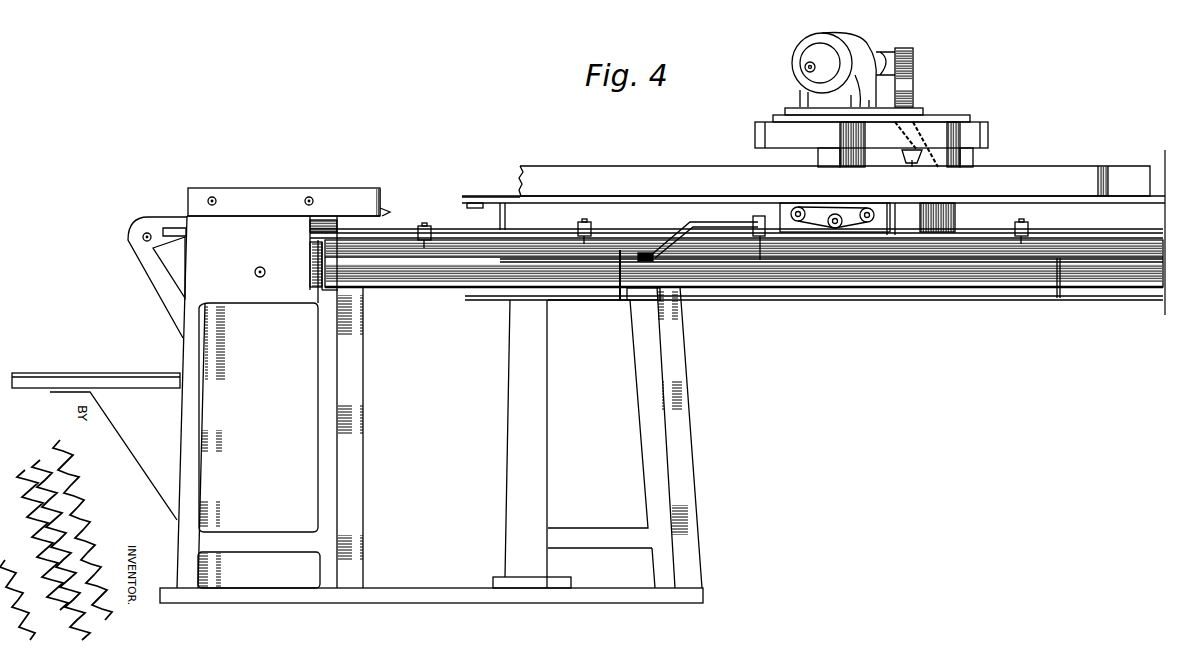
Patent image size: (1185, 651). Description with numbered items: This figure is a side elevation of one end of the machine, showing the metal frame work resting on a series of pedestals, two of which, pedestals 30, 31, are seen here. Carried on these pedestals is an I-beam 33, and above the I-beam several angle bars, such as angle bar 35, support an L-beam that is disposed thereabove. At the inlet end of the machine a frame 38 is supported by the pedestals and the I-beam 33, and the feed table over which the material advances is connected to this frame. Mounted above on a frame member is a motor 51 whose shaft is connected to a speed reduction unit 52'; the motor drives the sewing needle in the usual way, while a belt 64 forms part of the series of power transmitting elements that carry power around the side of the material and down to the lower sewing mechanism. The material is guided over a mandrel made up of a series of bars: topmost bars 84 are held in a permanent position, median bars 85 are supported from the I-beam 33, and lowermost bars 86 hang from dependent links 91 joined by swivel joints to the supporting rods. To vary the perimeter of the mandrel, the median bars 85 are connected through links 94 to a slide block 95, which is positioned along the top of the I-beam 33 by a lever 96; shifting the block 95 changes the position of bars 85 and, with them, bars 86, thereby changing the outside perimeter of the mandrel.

The pedestal 30 is at (367, 441).
The pedestal 31 is at (688, 425).
The I-beam 33 is at (441, 288).
The angle bar 35 is at (500, 216).
The frame 38 is at (297, 192).
The motor 51 is at (812, 40).
The speed reduction unit 52' is at (924, 71).
The belt 64 is at (843, 205).
The topmost mandrel bars 84 is at (685, 201).
The median mandrel bars 85 is at (512, 259).
The lowermost mandrel bars 86 is at (493, 301).
The dependent link 91 is at (616, 274).
The link 94 is at (717, 221).
The slide block 95 is at (760, 236).
The lever 96 is at (646, 237).